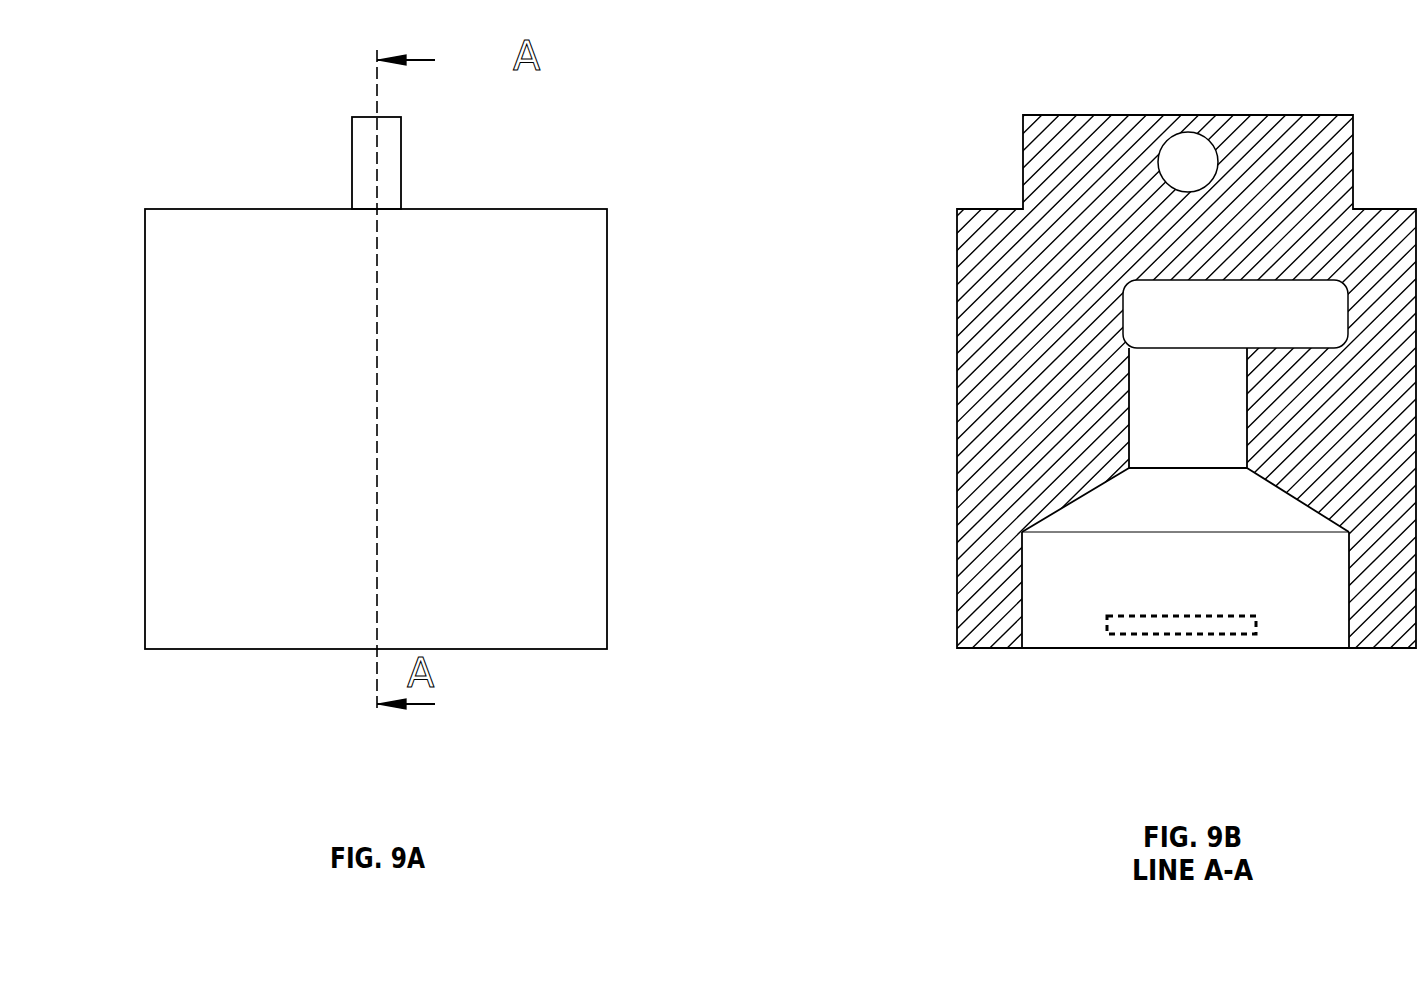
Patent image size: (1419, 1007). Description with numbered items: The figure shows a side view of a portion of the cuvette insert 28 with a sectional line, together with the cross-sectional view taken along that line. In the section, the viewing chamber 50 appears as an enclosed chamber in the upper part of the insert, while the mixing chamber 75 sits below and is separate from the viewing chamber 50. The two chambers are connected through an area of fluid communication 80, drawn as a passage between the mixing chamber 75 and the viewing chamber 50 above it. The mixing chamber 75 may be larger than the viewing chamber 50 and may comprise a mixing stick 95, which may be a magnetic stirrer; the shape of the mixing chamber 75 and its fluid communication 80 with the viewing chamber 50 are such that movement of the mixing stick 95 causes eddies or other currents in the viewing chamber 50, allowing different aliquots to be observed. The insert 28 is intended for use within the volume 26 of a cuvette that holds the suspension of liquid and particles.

In FIG. 9A, the cuvette insert 28 is at (135, 112).
In FIG. 9B, the cuvette insert 28 is at (970, 153).
In FIG. 9B, the viewing chamber 50 is at (1165, 310).
In FIG. 9B, the fluid communication 80 is at (1182, 413).
In FIG. 9B, the mixing chamber 75 is at (1128, 504).
In FIG. 9B, the volume 26 is at (1202, 560).
In FIG. 9B, the mixing stick 95 is at (1107, 622).